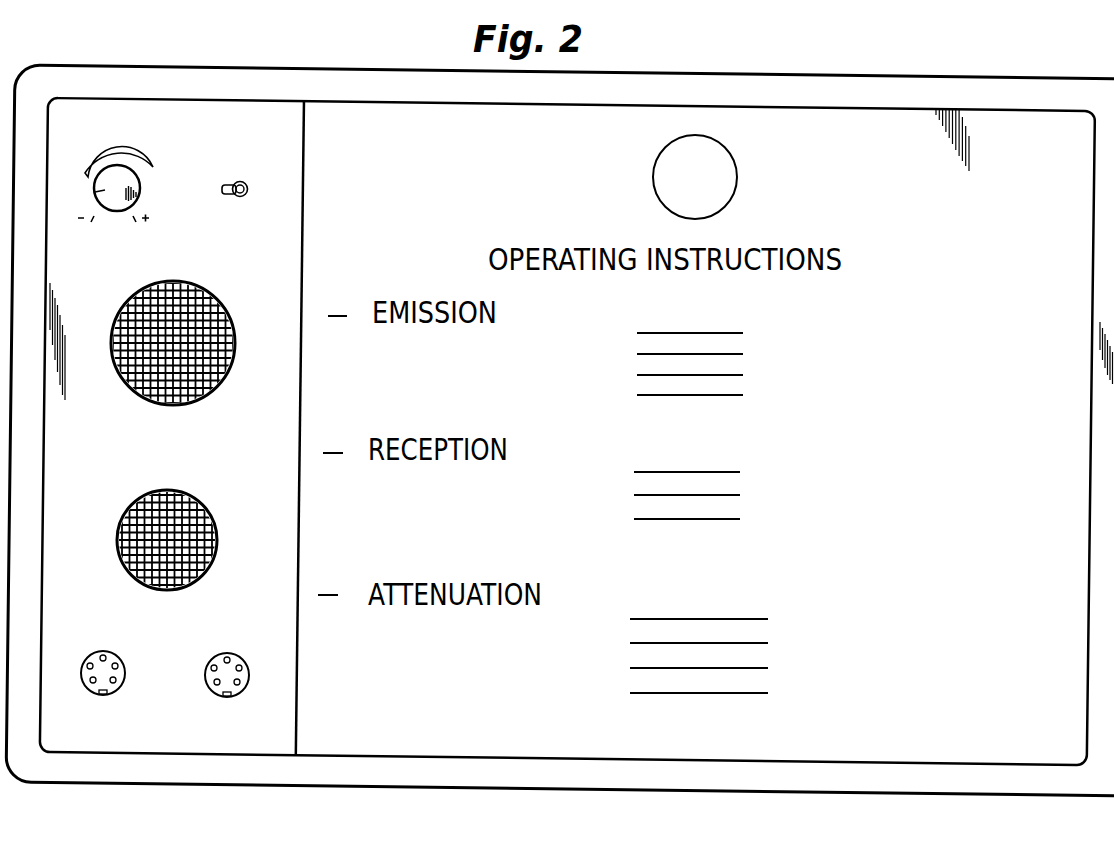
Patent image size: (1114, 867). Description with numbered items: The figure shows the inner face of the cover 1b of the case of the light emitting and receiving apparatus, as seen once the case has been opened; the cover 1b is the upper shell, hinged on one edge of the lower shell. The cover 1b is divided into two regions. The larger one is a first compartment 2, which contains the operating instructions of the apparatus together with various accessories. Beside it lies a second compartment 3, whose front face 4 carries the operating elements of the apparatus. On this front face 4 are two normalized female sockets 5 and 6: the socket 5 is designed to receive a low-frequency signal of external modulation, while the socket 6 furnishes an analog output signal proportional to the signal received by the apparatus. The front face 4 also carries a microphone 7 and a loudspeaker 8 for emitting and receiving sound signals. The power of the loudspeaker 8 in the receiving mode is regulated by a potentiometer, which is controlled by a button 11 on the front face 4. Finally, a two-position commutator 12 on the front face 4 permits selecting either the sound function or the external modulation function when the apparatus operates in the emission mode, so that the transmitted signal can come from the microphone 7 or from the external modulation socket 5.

The cover 1b is at (819, 72).
The first compartment 2 is at (995, 108).
The second compartment 3 is at (200, 97).
The front face 4 is at (182, 152).
The female socket 5 is at (247, 686).
The female socket 6 is at (124, 684).
The microphone 7 is at (217, 520).
The loudspeaker 8 is at (221, 304).
The button 11 is at (109, 170).
The two-position commutator 12 is at (240, 198).